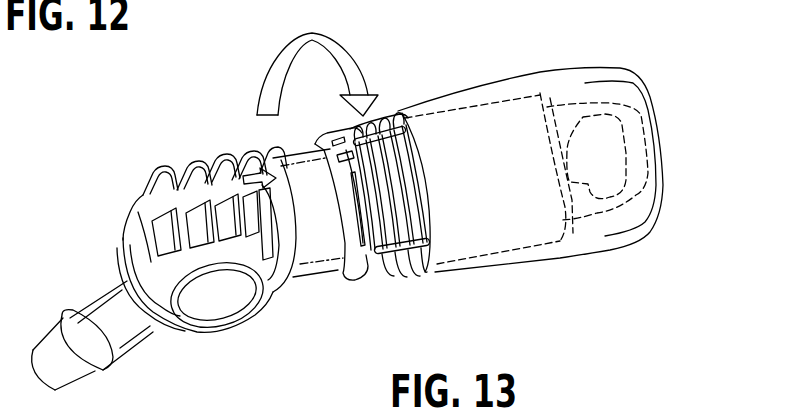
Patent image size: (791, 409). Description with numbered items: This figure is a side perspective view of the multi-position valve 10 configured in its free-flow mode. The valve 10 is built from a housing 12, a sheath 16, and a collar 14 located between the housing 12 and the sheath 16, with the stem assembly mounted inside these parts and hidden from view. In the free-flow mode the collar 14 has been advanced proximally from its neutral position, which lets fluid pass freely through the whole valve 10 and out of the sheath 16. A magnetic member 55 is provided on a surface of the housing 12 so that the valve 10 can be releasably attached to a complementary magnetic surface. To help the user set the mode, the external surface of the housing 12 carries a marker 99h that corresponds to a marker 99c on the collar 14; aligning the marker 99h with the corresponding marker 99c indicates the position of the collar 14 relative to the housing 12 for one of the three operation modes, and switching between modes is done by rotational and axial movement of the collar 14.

The multi-position valve 10 is at (65, 198).
The housing 12 is at (165, 172).
The collar 14 is at (400, 122).
The sheath 16 is at (597, 75).
The magnetic member 55 is at (222, 308).
The marker 99h is at (248, 160).
The marker 99c is at (372, 262).